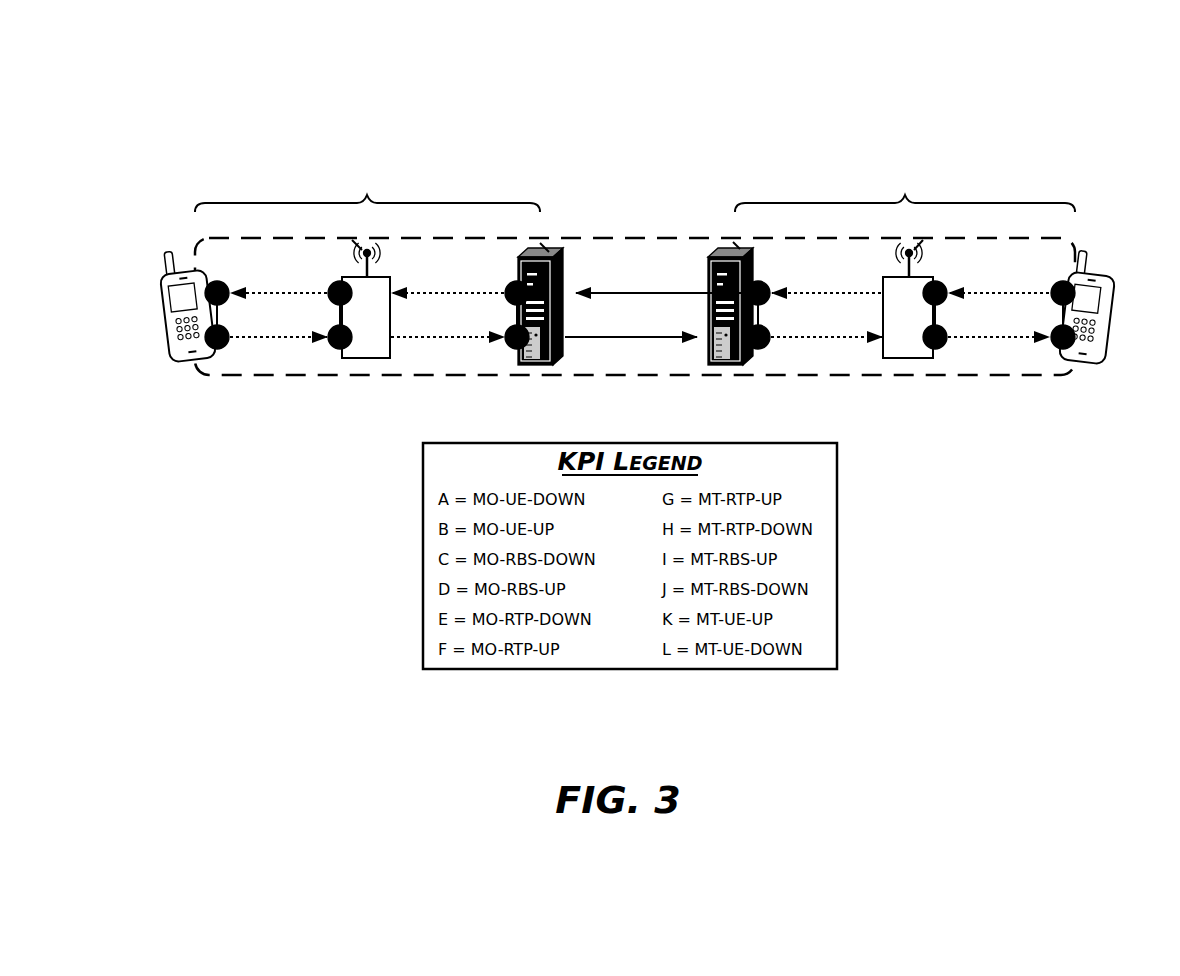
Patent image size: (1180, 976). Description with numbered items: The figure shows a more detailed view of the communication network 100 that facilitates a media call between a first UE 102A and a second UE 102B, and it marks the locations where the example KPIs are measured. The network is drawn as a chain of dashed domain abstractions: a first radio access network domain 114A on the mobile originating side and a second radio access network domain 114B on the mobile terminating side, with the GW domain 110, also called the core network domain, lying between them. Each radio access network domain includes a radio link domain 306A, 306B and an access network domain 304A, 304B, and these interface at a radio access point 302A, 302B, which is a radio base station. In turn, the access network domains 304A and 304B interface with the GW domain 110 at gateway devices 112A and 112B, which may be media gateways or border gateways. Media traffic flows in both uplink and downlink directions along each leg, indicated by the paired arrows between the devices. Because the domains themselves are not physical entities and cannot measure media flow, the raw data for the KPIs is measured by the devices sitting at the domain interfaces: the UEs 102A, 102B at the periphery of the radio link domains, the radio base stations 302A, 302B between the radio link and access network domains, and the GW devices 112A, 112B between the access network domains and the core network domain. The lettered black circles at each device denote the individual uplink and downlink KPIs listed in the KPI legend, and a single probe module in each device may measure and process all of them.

The communication network 100 is at (1118, 98).
The first UE 102A is at (212, 377).
The second UE 102B is at (1068, 377).
The GW domain 110 is at (619, 262).
The gateway device 112A is at (547, 365).
The gateway device 112B is at (716, 365).
The first radio access network domain 114A is at (346, 188).
The second radio access network domain 114B is at (884, 188).
The radio access point 302A is at (370, 358).
The radio access point 302B is at (907, 358).
The access network domain 304A is at (432, 262).
The access network domain 304B is at (801, 262).
The radio link domain 306A is at (259, 262).
The radio link domain 306B is at (974, 262).